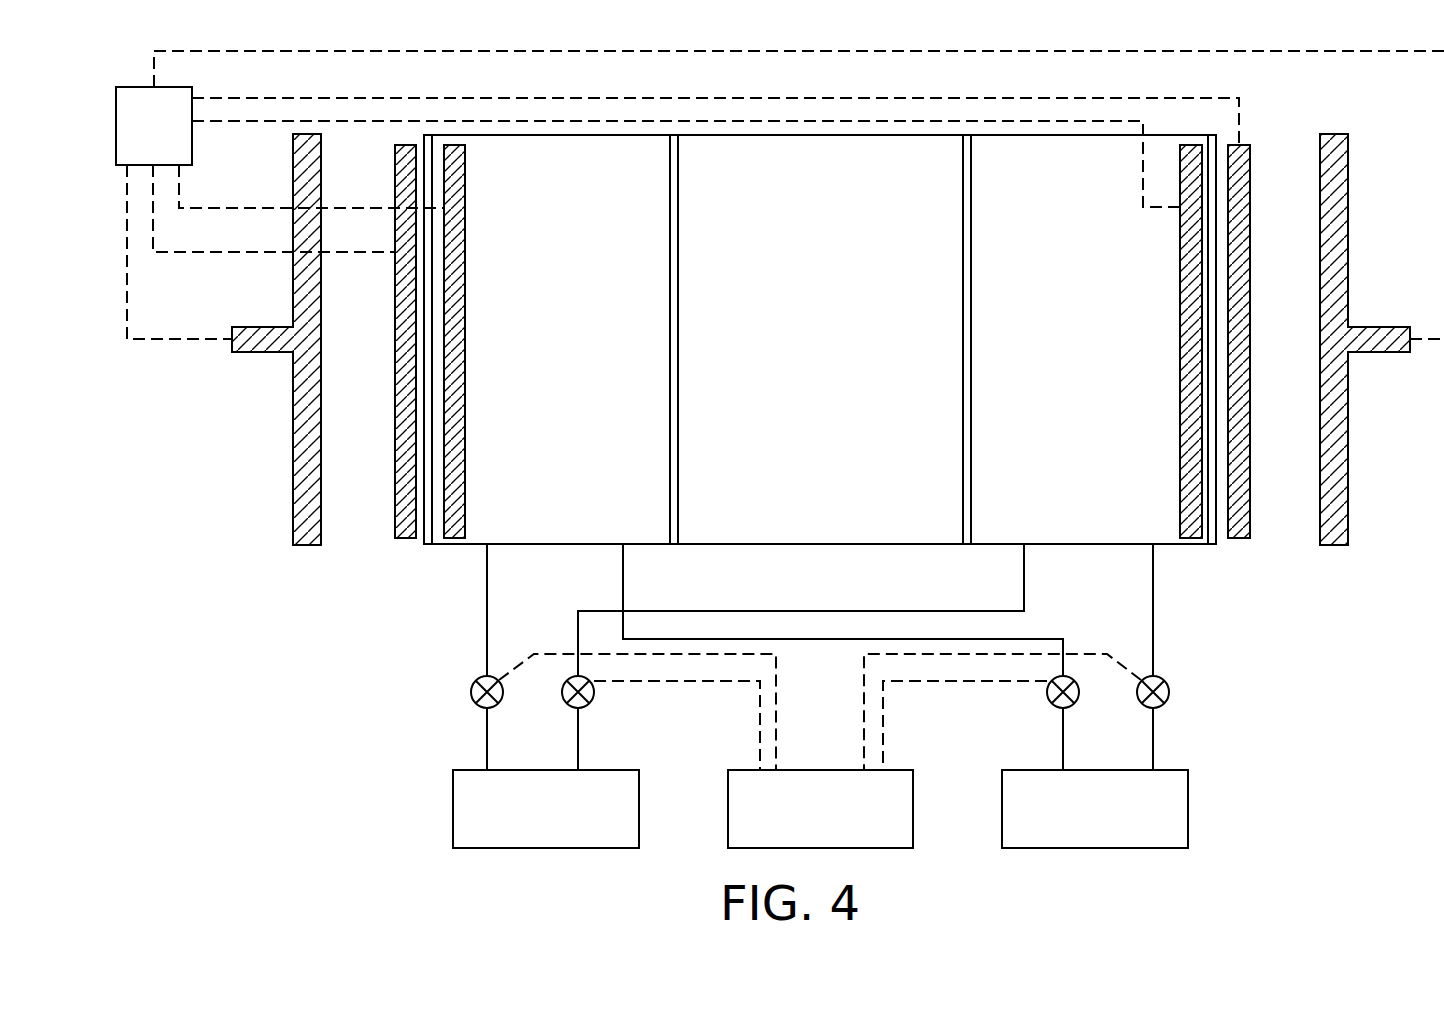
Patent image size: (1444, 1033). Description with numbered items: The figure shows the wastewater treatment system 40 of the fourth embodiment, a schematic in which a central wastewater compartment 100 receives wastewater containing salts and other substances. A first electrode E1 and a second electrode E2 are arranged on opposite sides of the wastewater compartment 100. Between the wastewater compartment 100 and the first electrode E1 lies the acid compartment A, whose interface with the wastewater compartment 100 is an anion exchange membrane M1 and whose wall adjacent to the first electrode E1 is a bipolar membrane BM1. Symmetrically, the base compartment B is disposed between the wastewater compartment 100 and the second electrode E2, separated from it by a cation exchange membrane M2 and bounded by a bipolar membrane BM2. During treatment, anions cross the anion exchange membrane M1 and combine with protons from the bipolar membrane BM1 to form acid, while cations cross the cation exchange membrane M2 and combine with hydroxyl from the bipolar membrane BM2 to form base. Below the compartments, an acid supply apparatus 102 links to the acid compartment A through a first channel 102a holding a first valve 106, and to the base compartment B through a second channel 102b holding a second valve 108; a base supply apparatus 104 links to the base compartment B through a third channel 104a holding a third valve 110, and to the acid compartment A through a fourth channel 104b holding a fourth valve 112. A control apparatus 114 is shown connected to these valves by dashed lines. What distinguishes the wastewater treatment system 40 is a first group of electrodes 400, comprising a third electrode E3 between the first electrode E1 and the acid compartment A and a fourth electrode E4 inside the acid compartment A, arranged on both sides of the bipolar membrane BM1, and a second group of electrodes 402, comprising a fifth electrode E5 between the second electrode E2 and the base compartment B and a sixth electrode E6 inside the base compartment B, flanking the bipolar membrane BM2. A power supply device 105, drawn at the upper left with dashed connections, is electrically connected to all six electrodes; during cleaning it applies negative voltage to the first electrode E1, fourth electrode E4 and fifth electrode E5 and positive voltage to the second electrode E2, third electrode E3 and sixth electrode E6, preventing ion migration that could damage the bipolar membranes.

The wastewater treatment system 40 is at (1355, 848).
The wastewater compartment 100 is at (848, 348).
The acid supply apparatus 102 is at (565, 818).
The first channel 102a is at (487, 745).
The second channel 102b is at (578, 738).
The base supply apparatus 104 is at (1118, 818).
The third channel 104a is at (1153, 738).
The fourth channel 104b is at (1063, 738).
The power supply device 105 is at (173, 142).
The first valve 106 is at (471, 690).
The second valve 108 is at (594, 690).
The third valve 110 is at (1169, 692).
The fourth valve 112 is at (1047, 690).
The control apparatus 114 is at (843, 818).
The first group of electrodes 400 is at (431, 398).
The second group of electrodes 402 is at (1213, 398).
The first electrode E1 is at (300, 470).
The second electrode E2 is at (1342, 447).
The third electrode E3 is at (406, 540).
The fourth electrode E4 is at (454, 540).
The fifth electrode E5 is at (1240, 540).
The sixth electrode E6 is at (1190, 540).
The bipolar membrane BM1 is at (429, 140).
The bipolar membrane BM2 is at (1212, 140).
The anion exchange membrane M1 is at (676, 140).
The cation exchange membrane M2 is at (968, 140).
The acid compartment A is at (579, 346).
The base compartment B is at (1094, 346).